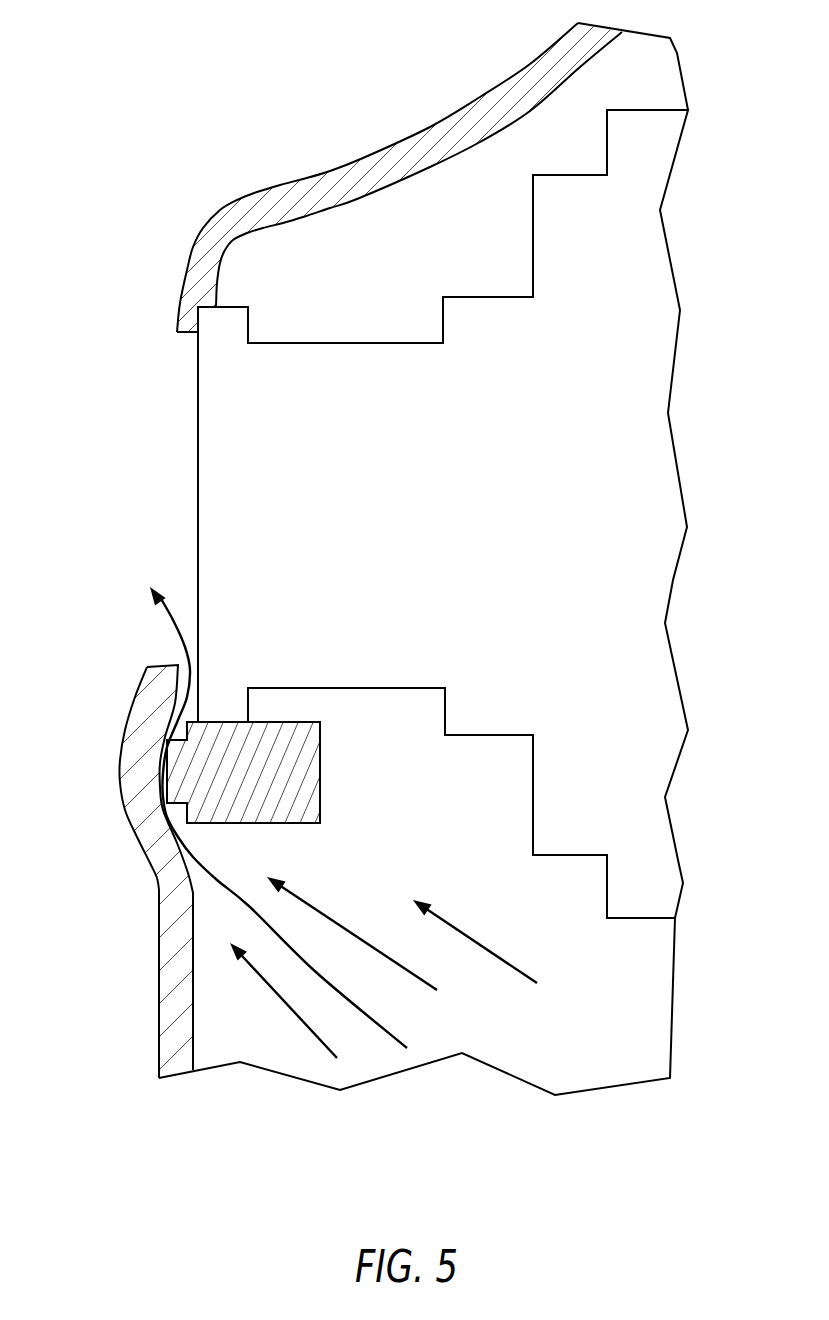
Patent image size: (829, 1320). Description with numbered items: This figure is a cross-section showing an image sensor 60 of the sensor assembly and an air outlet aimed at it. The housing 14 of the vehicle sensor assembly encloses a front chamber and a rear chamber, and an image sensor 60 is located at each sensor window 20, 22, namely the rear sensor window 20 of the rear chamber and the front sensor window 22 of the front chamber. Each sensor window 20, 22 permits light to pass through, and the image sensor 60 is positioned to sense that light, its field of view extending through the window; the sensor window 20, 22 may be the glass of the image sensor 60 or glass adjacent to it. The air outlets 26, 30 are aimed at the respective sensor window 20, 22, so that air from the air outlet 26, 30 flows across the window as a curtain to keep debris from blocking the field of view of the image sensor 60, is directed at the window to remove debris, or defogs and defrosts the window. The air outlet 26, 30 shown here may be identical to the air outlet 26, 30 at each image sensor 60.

The housing 14 is at (365, 157).
The rear sensor window 20 is at (197, 433).
The front sensor window 22 is at (197, 433).
The rear air outlet 26 is at (178, 717).
The front air outlet 30 is at (178, 717).
The image sensor 60 is at (570, 363).